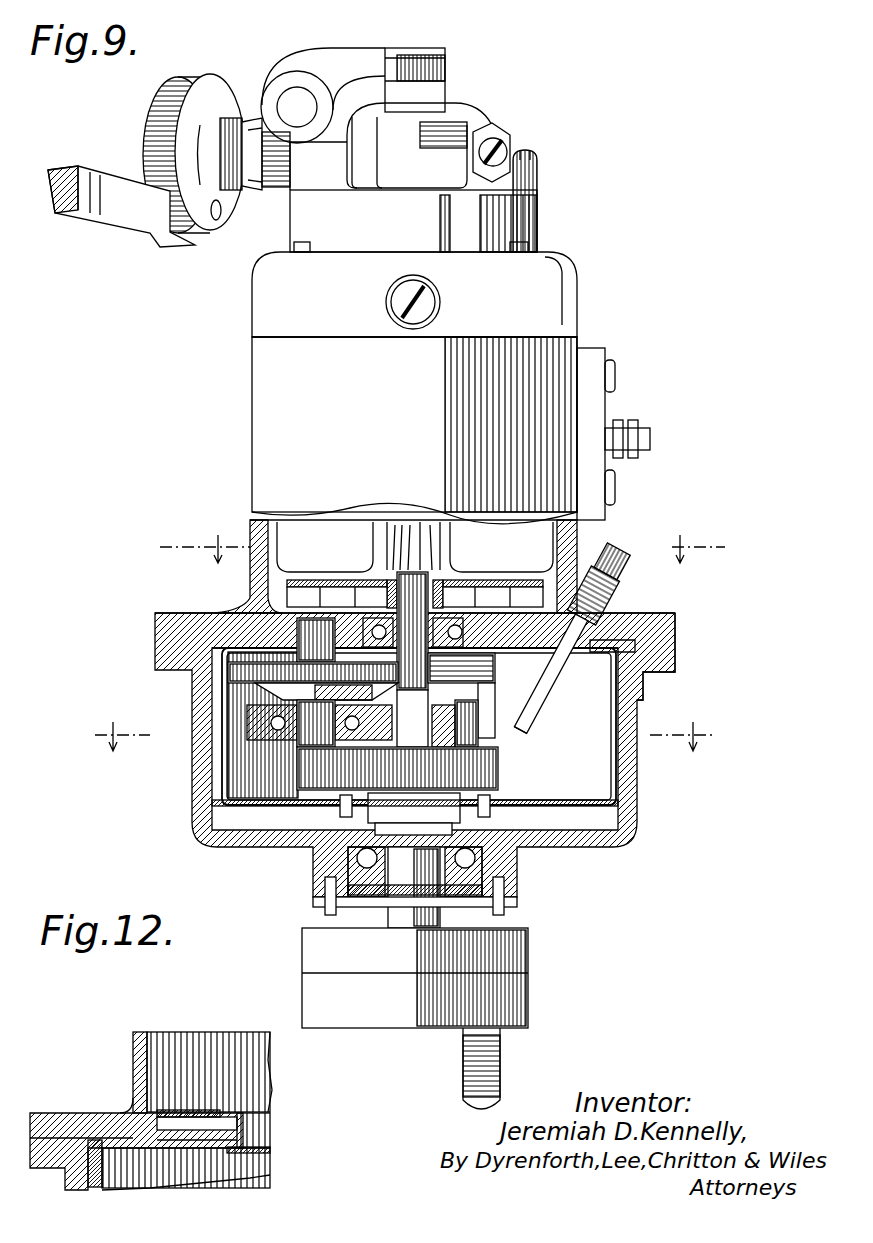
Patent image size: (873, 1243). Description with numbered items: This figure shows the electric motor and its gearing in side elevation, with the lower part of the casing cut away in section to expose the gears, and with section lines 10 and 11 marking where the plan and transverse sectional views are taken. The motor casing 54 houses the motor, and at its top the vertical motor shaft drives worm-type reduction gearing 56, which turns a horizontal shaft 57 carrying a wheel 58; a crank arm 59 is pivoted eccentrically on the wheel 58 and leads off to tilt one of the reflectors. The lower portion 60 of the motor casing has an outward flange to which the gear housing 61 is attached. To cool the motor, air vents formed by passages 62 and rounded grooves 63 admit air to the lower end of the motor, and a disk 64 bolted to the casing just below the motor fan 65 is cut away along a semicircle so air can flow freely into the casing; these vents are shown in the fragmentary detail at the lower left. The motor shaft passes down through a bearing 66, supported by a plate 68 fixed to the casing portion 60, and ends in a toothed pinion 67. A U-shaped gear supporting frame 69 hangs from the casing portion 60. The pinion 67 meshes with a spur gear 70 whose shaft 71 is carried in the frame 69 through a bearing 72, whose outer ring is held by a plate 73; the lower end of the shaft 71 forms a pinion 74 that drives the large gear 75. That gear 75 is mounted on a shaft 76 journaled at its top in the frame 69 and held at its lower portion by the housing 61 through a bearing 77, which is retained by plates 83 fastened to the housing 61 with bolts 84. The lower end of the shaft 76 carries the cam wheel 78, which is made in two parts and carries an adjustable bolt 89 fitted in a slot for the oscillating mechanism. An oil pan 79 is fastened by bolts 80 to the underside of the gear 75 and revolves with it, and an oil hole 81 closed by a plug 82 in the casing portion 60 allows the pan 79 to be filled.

In FIG. 9, the section line 10— 10 is at (444, 549).
In FIG. 9, the section line 11— 11 is at (412, 735).
In FIG. 9, the motor casing 54 is at (265, 443).
In FIG. 9, the reduction gearing 56 is at (378, 50).
In FIG. 9, the horizontal shaft 57 is at (283, 140).
In FIG. 9, the wheel 58 is at (220, 92).
In FIG. 9, the crank arm 59 is at (95, 178).
In FIG. 9, the lower portion of the motor casing 60 is at (250, 572).
In FIG. 12, the lower portion of the motor casing 60 is at (140, 1050).
In FIG. 9, the gear housing 61 is at (645, 705).
In FIG. 12, the gear housing 61 is at (149, 1176).
In FIG. 12, the passages 62 is at (115, 1118).
In FIG. 12, the rounded grooves 63 is at (185, 1125).
In FIG. 9, the disk 64 is at (300, 640).
In FIG. 12, the disk 64 is at (195, 1115).
In FIG. 9, the motor fan 65 is at (505, 590).
In FIG. 9, the bearing 66 is at (375, 625).
In FIG. 9, the toothed pinion 67 is at (480, 680).
In FIG. 9, the plate 68 is at (470, 660).
In FIG. 12, the plate 68 is at (270, 1130).
In FIG. 9, the gear supporting frame 69 is at (482, 720).
In FIG. 9, the spur gear 70 is at (215, 683).
In FIG. 9, the shaft 71 is at (215, 620).
In FIG. 9, the bearing 72 is at (255, 713).
In FIG. 9, the plate 73 is at (255, 742).
In FIG. 9, the pinion 74 is at (300, 775).
In FIG. 9, the gear 75 is at (495, 762).
In FIG. 9, the shaft 76 is at (455, 690).
In FIG. 9, the bearing 77 is at (490, 852).
In FIG. 9, the cam wheel 78 is at (505, 945).
In FIG. 9, the oil pan 79 is at (618, 780).
In FIG. 12, the oil pan 79 is at (245, 1158).
In FIG. 9, the bolts 80 is at (345, 805).
In FIG. 9, the oil hole 81 is at (598, 630).
In FIG. 9, the plug 82 is at (620, 560).
In FIG. 9, the plates 83 is at (375, 905).
In FIG. 9, the bolts 84 is at (322, 910).
In FIG. 9, the bolt 89 is at (500, 1052).